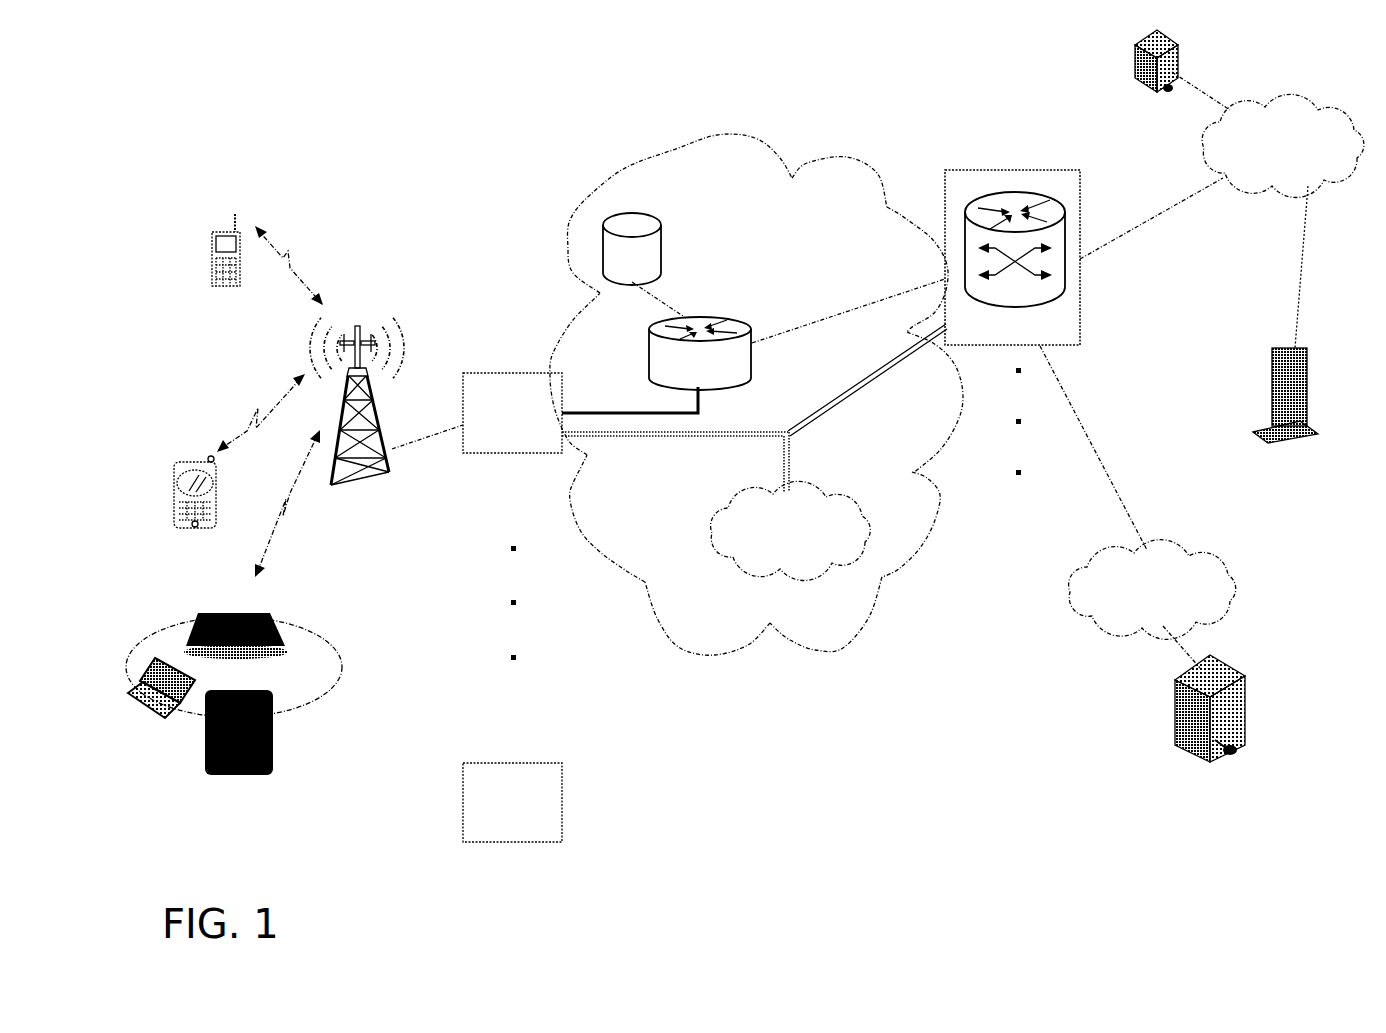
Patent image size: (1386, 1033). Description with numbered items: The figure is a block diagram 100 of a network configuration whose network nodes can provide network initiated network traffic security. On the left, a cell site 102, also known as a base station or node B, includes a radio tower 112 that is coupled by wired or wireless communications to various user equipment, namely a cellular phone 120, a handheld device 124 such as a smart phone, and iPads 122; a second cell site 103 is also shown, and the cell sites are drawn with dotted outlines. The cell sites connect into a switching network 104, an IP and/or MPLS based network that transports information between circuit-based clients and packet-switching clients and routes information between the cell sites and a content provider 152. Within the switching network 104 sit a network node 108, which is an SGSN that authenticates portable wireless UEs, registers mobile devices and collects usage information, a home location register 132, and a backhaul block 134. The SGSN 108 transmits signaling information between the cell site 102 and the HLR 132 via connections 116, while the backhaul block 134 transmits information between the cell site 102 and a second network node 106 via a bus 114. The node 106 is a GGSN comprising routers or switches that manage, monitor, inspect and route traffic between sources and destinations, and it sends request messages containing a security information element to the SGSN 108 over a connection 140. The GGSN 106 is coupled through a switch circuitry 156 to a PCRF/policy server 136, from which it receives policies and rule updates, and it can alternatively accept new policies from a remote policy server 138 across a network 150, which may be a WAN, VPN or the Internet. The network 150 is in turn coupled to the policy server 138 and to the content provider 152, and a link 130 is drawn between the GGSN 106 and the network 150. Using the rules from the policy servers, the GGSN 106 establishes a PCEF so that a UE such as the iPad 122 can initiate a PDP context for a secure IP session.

The block diagram 100 is at (298, 84).
The cell site 102 is at (548, 372).
The cell site 103 is at (517, 762).
The switching network 104 is at (720, 133).
The GGSN 106 is at (997, 338).
The SGSN 108 is at (704, 313).
The radio tower 112 is at (366, 478).
The bus 114 is at (625, 443).
The connections 116 is at (632, 412).
The cellular phone 120 is at (228, 230).
The iPads 122 is at (327, 692).
The handheld device 124 is at (200, 463).
The link between GGSN and network 130 is at (1117, 242).
The home location register 132 is at (667, 250).
The backhaul block 134 is at (807, 493).
The PCRF/policy server 136 is at (1170, 705).
The remote policy server 138 is at (1133, 60).
The connection 140 is at (857, 305).
The network 150 is at (1262, 158).
The content provider 152 is at (1293, 347).
The switch circuitry 156 is at (1110, 550).